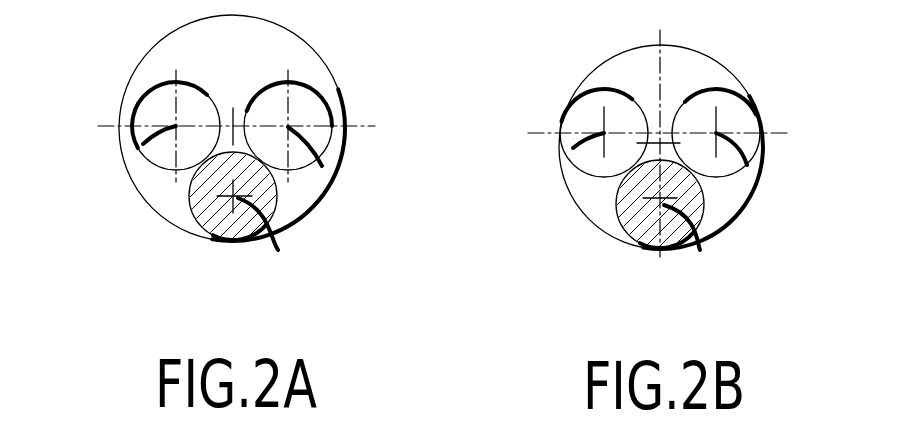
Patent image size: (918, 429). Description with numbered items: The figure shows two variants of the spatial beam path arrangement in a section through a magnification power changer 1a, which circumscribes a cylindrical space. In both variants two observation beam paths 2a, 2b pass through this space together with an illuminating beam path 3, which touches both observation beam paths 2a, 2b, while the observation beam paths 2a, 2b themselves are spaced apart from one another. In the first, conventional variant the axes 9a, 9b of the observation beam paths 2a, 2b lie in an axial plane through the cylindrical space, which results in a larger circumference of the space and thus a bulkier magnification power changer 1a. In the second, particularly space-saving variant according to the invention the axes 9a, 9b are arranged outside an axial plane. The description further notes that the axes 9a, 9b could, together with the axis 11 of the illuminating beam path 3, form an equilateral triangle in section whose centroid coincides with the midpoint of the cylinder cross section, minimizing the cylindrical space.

In FIG. 2A, the magnification power changer 1a is at (138, 193).
In FIG. 2B, the magnification power changer 1a is at (580, 210).
In FIG. 2A, the first observation beam path 2a is at (145, 112).
In FIG. 2B, the first observation beam path 2a is at (570, 115).
In FIG. 2A, the second observation beam path 2b is at (313, 108).
In FIG. 2B, the second observation beam path 2b is at (743, 110).
In FIG. 2A, the axis of first observation beam path 9a is at (136, 153).
In FIG. 2B, the axis of first observation beam path 9a is at (567, 157).
In FIG. 2A, the axis of second observation beam path 9b is at (334, 176).
In FIG. 2B, the axis of second observation beam path 9b is at (758, 181).
In FIG. 2A, the illuminating beam path 3 is at (213, 218).
In FIG. 2B, the illuminating beam path 3 is at (640, 226).
In FIG. 2A, the axis of illuminating beam path 11 is at (278, 250).
In FIG. 2B, the axis of illuminating beam path 11 is at (700, 250).